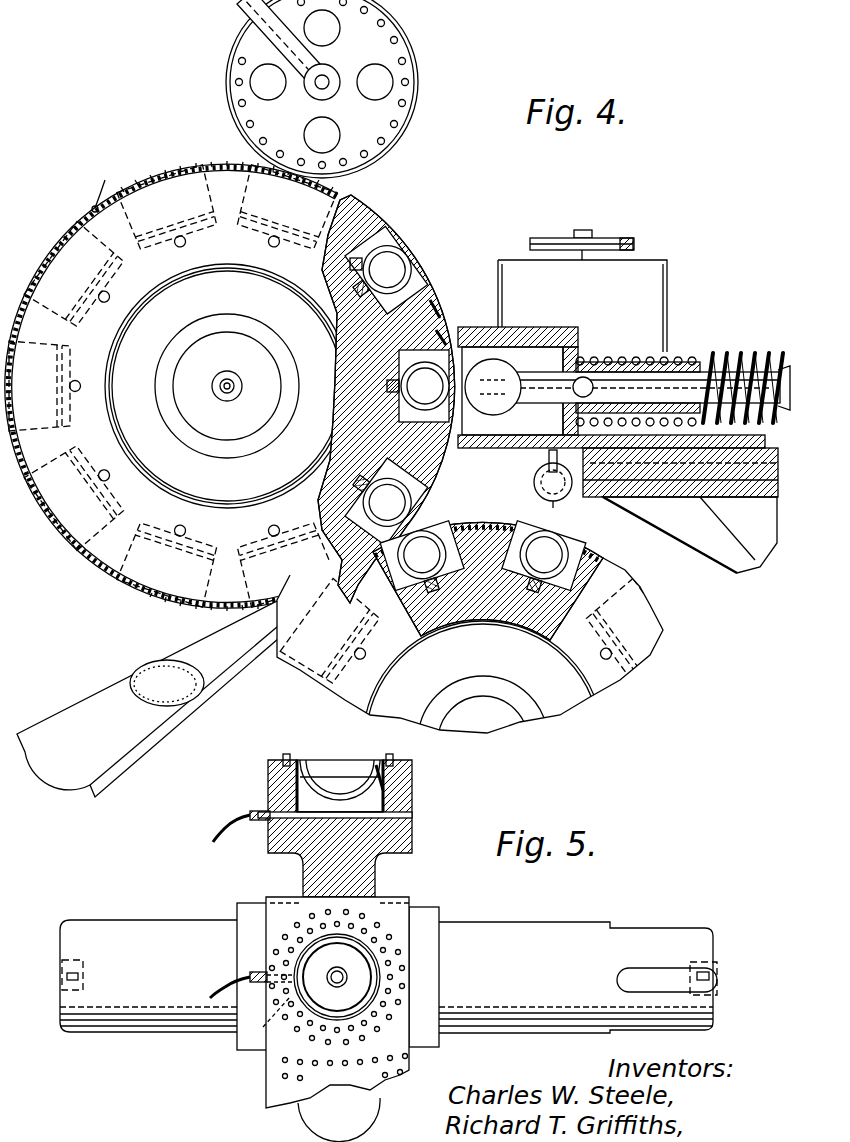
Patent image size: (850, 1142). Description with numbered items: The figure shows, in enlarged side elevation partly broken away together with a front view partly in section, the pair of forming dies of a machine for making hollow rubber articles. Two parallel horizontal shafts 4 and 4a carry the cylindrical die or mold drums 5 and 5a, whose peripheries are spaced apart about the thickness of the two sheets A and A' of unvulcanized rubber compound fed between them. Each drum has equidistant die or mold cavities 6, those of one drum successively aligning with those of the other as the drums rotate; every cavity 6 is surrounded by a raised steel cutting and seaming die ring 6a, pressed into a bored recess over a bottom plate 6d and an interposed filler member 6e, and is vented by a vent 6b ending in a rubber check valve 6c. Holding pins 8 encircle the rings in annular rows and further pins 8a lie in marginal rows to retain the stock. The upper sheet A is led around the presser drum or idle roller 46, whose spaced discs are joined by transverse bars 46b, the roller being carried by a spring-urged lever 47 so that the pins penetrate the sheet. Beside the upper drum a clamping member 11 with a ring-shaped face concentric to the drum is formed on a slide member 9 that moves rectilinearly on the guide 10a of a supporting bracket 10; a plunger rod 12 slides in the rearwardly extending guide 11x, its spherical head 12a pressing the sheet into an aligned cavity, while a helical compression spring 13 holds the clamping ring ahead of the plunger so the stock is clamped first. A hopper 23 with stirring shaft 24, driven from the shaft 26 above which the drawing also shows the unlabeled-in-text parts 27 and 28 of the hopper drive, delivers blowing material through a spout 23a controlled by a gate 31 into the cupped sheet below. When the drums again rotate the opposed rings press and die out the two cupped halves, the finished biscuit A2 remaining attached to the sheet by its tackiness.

In FIG. 4, the horizontal shaft 4 is at (243, 381).
In FIG. 5, the horizontal shaft 4 is at (140, 930).
In FIG. 4, the horizontal shaft 4a is at (520, 722).
In FIG. 4, the drum or cylindrical die member 5 is at (227, 386).
In FIG. 5, the drum or cylindrical die member 5 is at (330, 872).
In FIG. 4, the drum or cylindrical die member 5a is at (483, 741).
In FIG. 4, the die or mold cavity 6 is at (460, 414).
In FIG. 5, the die or mold cavity 6 is at (362, 962).
In FIG. 4, the cutting and seaming die ring 6a is at (425, 292).
In FIG. 5, the cutting and seaming die ring 6a is at (384, 760).
In FIG. 4, the vent 6b is at (395, 240).
In FIG. 5, the vent 6b is at (264, 810).
In FIG. 5, the check valve 6c is at (222, 985).
In FIG. 4, the bottom plate 6d is at (343, 318).
In FIG. 5, the bottom plate 6d is at (412, 815).
In FIG. 4, the filler member 6e is at (428, 322).
In FIG. 5, the filler member 6e is at (385, 790).
In FIG. 4, the holding pins 8 is at (170, 172).
In FIG. 5, the holding pins 8 is at (287, 756).
In FIG. 4, the holding pins 8a is at (95, 183).
In FIG. 5, the holding pins 8a is at (286, 930).
In FIG. 4, the slide member 9 is at (692, 470).
In FIG. 4, the supporting bracket 10 is at (720, 545).
In FIG. 4, the supporting guide 10a is at (772, 543).
In FIG. 4, the clamping member 11 is at (508, 446).
In FIG. 4, the rearwardly extending guide 11x is at (668, 366).
In FIG. 4, the plunger rod 12 is at (548, 371).
In FIG. 4, the plunger head 12a is at (495, 372).
In FIG. 4, the helical compression spring 13 is at (622, 360).
In FIG. 4, the hopper 23 is at (642, 296).
In FIG. 4, the spout 23a is at (535, 485).
In FIG. 4, the stirrer shaft 24 is at (590, 372).
In FIG. 4, the drive shaft 26 is at (576, 231).
In FIG. 4, the pulley 27 is at (615, 238).
In FIG. 4, the pulley thread 28 is at (637, 243).
In FIG. 4, the cut-off or gate 31 is at (560, 498).
In FIG. 4, the presser drum or idle roller 46 is at (400, 73).
In FIG. 4, the transverse bars or rods 46b is at (407, 107).
In FIG. 4, the lever 47 is at (290, 44).
In FIG. 4, the sheet of plastic material A is at (300, 89).
In FIG. 4, the sheet of plastic material A' is at (481, 614).
In FIG. 4, the biscuit A2 is at (157, 672).